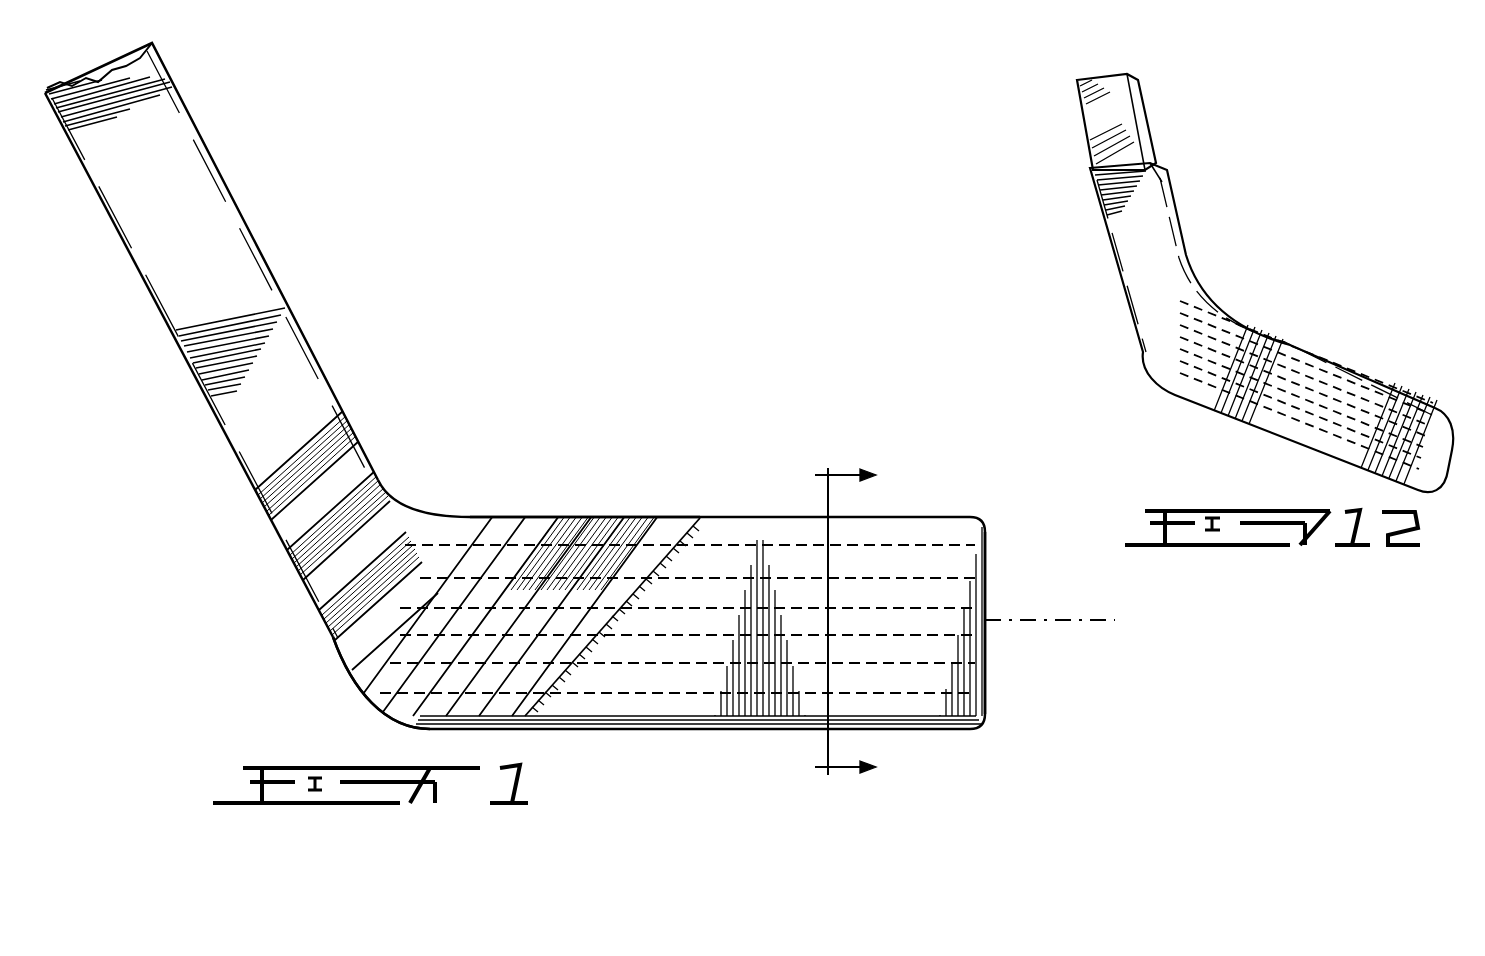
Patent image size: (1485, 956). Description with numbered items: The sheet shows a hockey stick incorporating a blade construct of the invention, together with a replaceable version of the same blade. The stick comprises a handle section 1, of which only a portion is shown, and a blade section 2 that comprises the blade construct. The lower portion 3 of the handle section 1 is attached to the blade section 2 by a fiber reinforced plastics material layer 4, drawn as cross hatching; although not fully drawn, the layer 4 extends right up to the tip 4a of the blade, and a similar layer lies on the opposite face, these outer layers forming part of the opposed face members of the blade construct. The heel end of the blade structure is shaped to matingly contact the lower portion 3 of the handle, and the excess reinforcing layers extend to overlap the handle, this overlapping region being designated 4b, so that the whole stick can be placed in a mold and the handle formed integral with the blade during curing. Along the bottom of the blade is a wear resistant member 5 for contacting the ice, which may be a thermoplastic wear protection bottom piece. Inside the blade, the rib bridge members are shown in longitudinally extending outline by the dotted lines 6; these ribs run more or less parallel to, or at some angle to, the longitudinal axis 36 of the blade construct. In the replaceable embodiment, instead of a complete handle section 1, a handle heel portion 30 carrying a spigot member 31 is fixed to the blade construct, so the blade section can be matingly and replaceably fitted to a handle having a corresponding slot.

In FIG. 1, the handle section 1 is at (268, 262).
In FIG. 1, the blade section 2 is at (990, 455).
In FIG. 1, the lower portion of the handle 3 is at (310, 615).
In FIG. 1, the fiber reinforced plastics material layer 4 is at (655, 530).
In FIG. 1, the tip of the blade 4a is at (985, 655).
In FIG. 1, the overlapping portion of the fiber reinforced layers 4b is at (470, 650).
In FIG. 1, the wear resistant member 5 is at (733, 729).
In FIG. 1, the dotted lines 6 is at (930, 575).
In FIG. 12, the dotted lines 6 is at (1385, 415).
In FIG. 1, the longitudinal axis 36 is at (1085, 620).
In FIG. 12, the handle heel portion 30 is at (1135, 250).
In FIG. 12, the spigot member 31 is at (1148, 128).